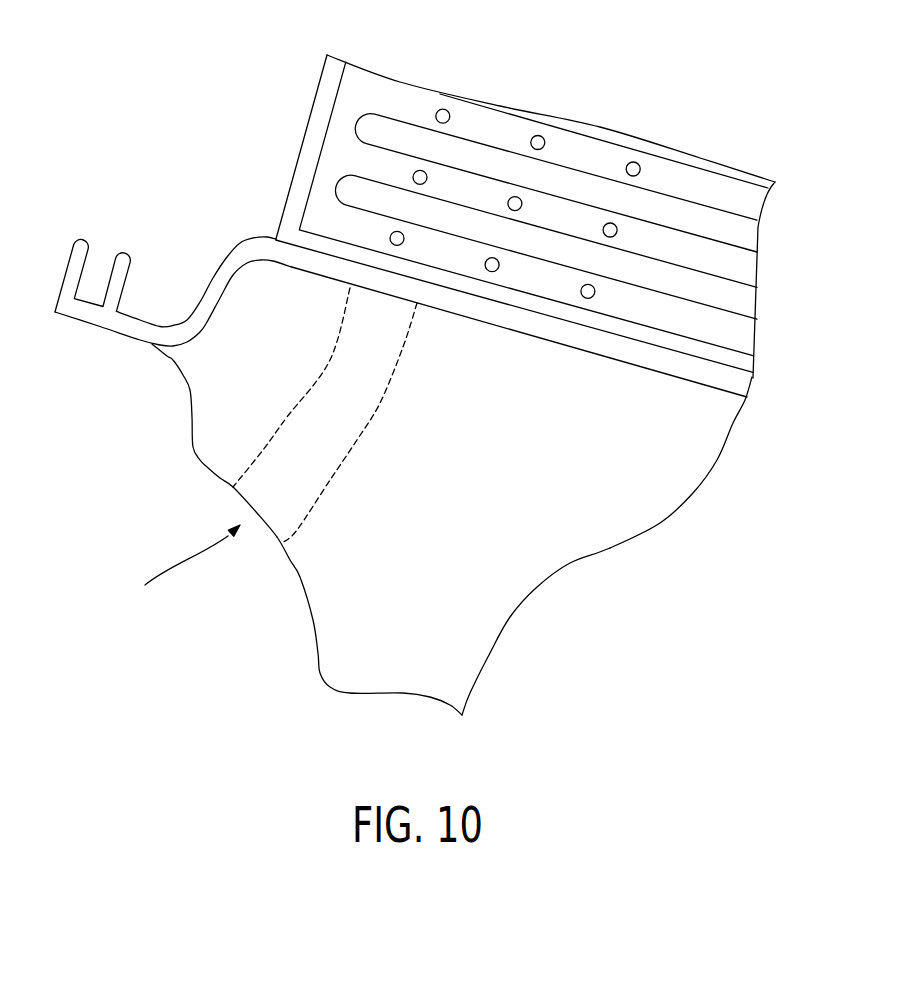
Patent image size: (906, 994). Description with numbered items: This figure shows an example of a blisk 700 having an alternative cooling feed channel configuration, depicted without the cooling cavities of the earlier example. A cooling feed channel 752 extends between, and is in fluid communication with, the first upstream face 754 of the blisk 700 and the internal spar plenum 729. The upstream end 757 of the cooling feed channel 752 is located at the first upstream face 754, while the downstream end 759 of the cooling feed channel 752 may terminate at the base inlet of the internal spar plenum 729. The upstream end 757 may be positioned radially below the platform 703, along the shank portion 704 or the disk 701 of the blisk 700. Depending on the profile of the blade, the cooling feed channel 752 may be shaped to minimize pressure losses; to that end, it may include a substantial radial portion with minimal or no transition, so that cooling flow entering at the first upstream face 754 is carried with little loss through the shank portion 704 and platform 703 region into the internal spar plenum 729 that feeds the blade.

The blisk 700 is at (110, 92).
The disk 701 is at (478, 652).
The platform 703 is at (575, 333).
The shank portion 704 is at (722, 417).
The internal spar plenum 729 is at (408, 163).
The cooling feed channel 752 is at (360, 442).
The first upstream face 754 is at (315, 625).
The upstream end 757 is at (237, 487).
The downstream end 759 is at (402, 297).